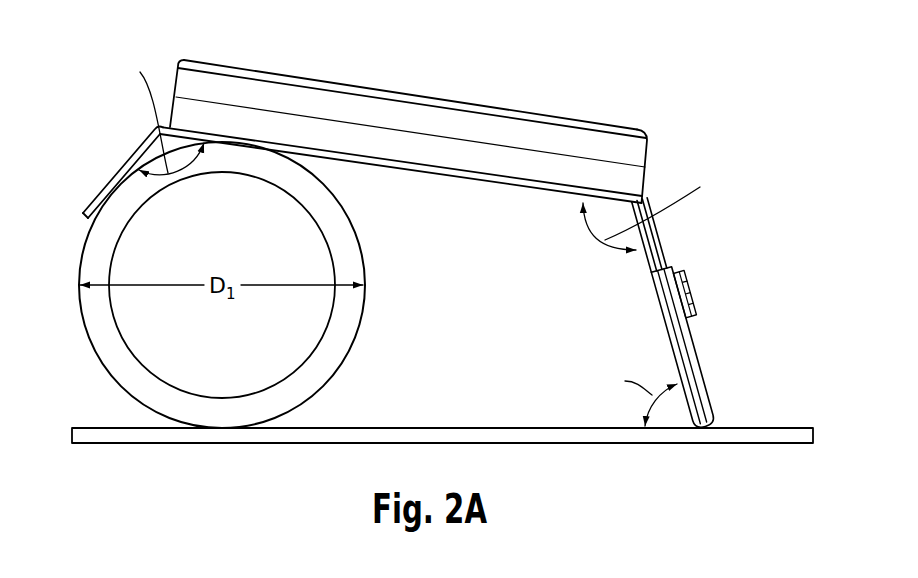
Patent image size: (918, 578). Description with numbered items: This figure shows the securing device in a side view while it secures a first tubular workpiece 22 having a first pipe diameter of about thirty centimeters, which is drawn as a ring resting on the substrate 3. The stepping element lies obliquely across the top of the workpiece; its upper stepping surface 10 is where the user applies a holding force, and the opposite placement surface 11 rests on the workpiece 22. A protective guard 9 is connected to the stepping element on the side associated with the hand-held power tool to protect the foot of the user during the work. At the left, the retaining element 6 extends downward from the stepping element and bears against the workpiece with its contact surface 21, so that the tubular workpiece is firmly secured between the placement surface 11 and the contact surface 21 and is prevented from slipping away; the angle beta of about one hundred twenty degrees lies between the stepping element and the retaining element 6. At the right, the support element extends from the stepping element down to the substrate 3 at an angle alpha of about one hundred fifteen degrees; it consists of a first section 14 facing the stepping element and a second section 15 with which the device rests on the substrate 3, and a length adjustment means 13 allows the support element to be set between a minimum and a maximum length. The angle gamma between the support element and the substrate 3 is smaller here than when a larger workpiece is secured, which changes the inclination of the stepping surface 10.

The substrate 3 is at (87, 426).
The retaining element 6 is at (104, 132).
The protective guard 9 is at (263, 100).
The stepping surface 10 is at (403, 151).
The placement surface 11 is at (517, 193).
The length adjustment means 13 is at (727, 300).
The first section 14 is at (657, 233).
The second section 15 is at (709, 407).
The contact surface 21 is at (116, 197).
The first tubular workpiece 22 is at (310, 376).